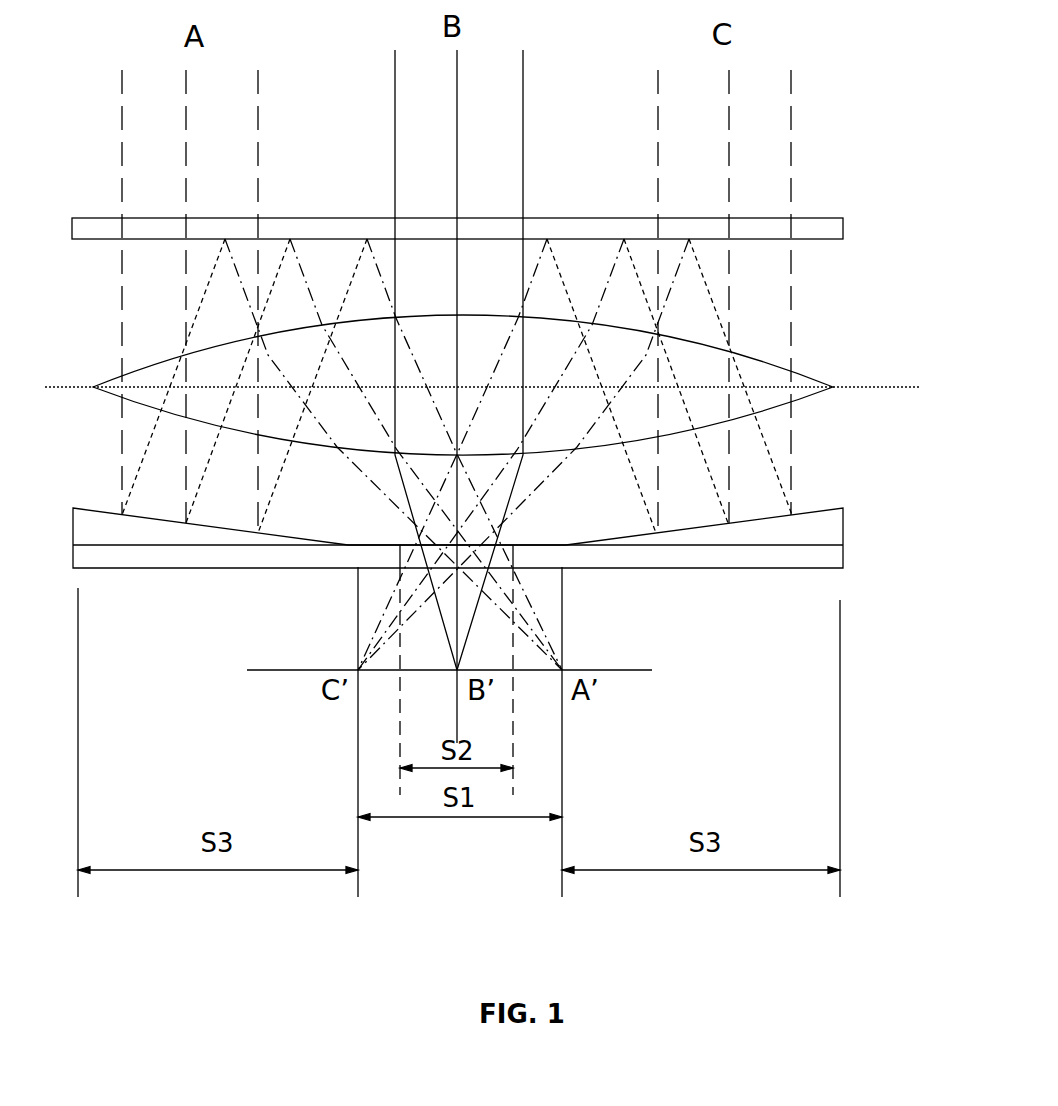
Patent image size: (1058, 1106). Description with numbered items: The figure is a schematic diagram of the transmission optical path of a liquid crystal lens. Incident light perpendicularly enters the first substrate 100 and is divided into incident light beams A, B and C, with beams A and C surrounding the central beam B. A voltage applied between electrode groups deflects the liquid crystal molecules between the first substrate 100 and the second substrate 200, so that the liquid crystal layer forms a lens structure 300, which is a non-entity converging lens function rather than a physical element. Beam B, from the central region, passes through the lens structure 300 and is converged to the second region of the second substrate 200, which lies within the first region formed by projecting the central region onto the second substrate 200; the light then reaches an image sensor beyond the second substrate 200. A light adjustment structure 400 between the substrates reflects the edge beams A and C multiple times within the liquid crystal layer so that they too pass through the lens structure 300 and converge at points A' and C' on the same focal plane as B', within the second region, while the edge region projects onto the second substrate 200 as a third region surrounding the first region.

The first substrate 100 is at (843, 220).
The second substrate 200 is at (843, 568).
The lens structure 300 is at (833, 387).
The light adjustment structure 400 is at (843, 508).